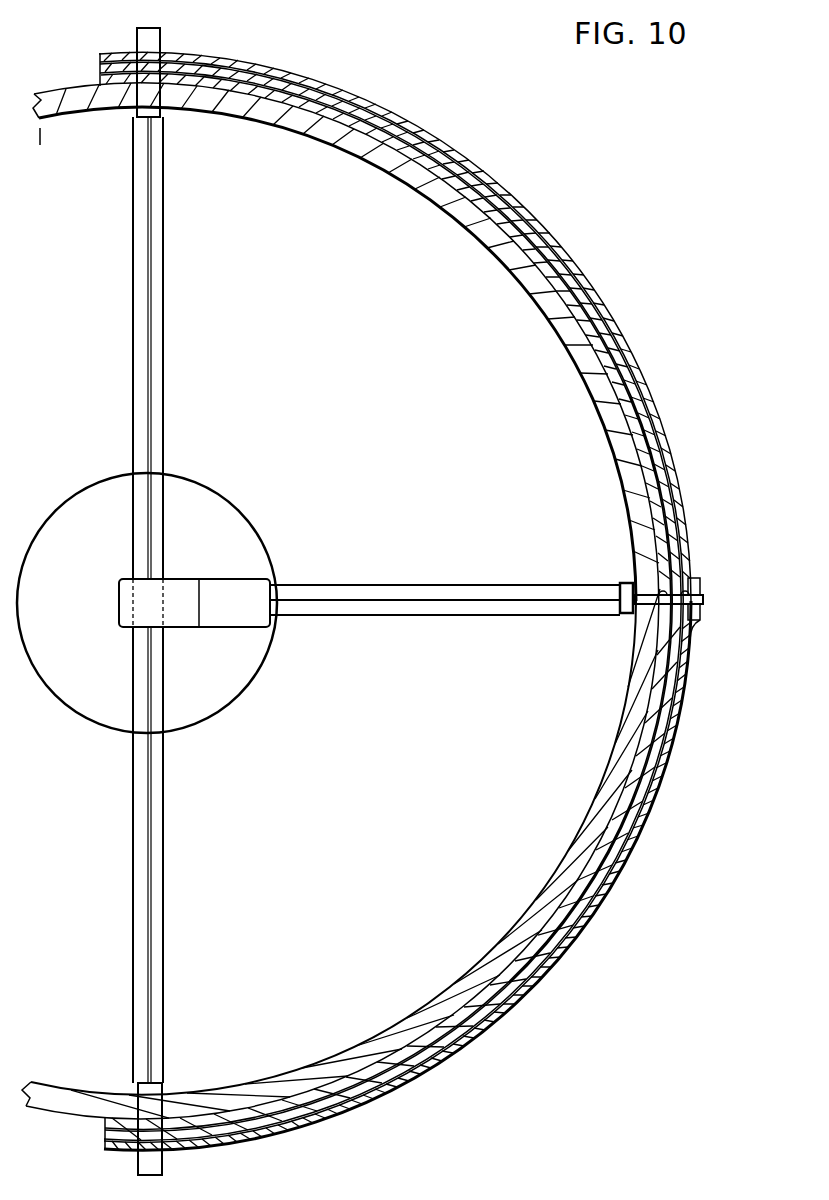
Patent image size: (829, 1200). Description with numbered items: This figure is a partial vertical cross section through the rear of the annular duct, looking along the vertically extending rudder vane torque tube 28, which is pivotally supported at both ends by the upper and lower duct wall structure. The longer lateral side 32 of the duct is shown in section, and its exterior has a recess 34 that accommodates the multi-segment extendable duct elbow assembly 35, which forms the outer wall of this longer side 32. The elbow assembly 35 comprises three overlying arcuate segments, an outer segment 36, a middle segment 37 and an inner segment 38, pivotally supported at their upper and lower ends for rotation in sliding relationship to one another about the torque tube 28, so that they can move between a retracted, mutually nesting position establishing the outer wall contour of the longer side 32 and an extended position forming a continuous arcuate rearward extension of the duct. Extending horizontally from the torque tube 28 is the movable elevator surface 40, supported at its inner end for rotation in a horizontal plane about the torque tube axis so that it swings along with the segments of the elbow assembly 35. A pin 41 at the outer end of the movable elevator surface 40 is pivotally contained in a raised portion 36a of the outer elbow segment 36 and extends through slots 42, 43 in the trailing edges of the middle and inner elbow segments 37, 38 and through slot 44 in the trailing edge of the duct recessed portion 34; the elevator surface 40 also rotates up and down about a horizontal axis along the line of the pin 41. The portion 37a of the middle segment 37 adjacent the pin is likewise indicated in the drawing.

The torque tube 28 is at (154, 42).
The longer lateral side of the duct 32 is at (57, 80).
The recess 34 is at (97, 70).
The extendable duct elbow assembly 35 is at (471, 144).
The outer elbow segment 36 is at (535, 220).
The middle elbow segment 37 is at (560, 263).
The inner elbow segment 38 is at (585, 312).
The movable elevator surface 40 is at (463, 584).
The pin 41 is at (705, 598).
The slot 42 is at (697, 578).
The slot 43 is at (660, 593).
The slot 44 is at (637, 597).
The raised portion of the outer elbow segment 36a is at (705, 616).
The end of layer 37 37a is at (695, 628).